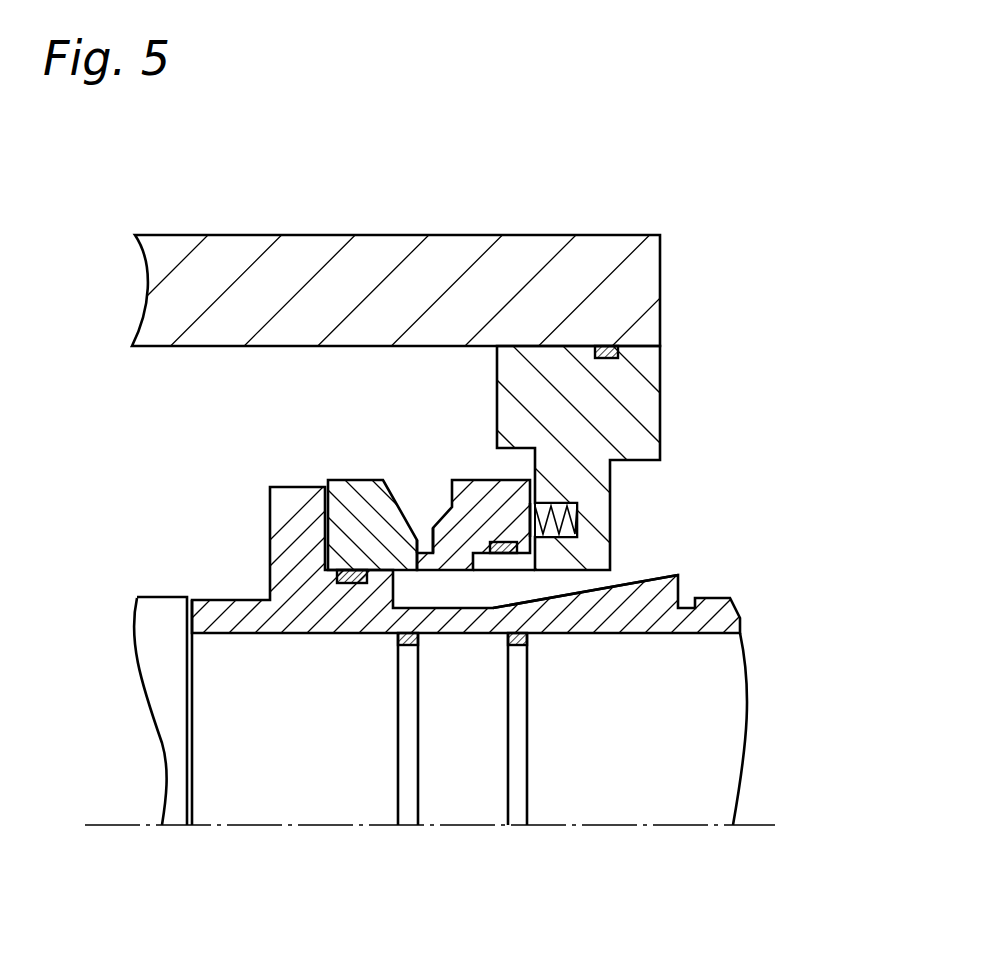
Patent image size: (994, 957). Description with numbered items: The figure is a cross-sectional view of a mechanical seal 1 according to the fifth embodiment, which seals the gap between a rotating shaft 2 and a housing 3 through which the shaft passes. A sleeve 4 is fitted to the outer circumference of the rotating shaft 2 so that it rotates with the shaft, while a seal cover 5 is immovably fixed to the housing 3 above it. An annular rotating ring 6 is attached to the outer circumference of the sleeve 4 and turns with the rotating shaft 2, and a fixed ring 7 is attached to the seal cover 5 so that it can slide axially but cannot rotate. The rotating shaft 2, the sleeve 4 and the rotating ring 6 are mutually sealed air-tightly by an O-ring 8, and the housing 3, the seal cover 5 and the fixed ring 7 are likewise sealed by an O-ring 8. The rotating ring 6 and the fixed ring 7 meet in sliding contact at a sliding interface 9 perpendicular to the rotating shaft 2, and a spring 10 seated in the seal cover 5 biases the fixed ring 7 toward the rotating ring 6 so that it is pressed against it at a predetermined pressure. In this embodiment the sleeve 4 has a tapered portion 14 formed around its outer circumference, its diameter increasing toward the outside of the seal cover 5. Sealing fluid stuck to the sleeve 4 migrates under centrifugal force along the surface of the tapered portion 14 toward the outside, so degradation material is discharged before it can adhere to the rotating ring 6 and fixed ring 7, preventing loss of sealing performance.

The mechanical seal 1 is at (585, 428).
The rotating shaft 2 is at (742, 737).
The housing 3 is at (294, 240).
The sleeve 4 is at (739, 617).
The seal cover 5 is at (662, 410).
The rotating ring 6 is at (336, 474).
The fixed ring 7 is at (478, 474).
The O-ring 8 is at (603, 345).
The sliding interface 9 is at (432, 548).
The spring 10 is at (578, 526).
The tapered portion 14 is at (643, 578).